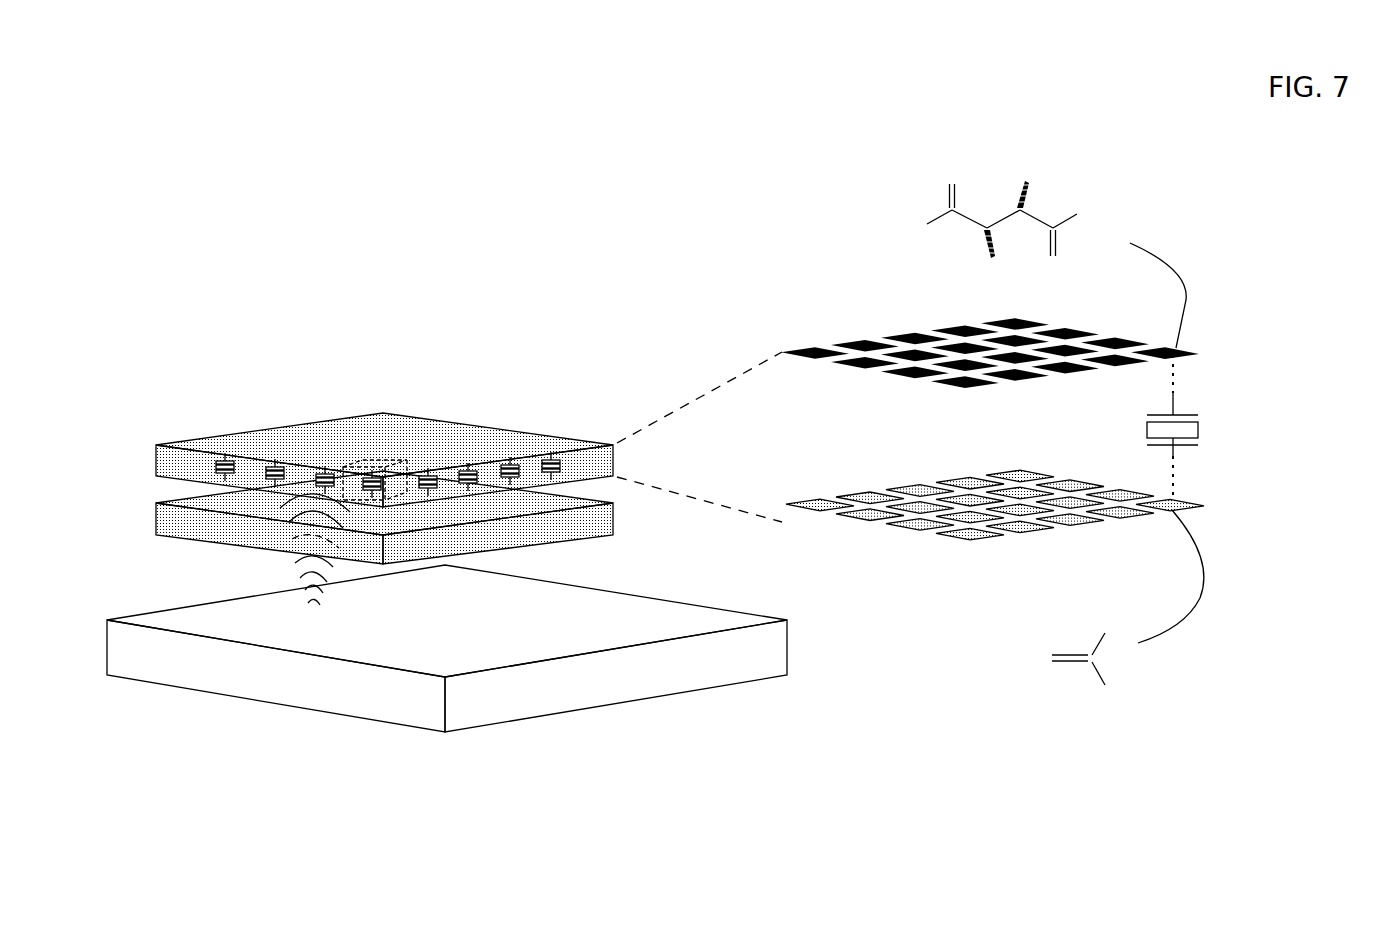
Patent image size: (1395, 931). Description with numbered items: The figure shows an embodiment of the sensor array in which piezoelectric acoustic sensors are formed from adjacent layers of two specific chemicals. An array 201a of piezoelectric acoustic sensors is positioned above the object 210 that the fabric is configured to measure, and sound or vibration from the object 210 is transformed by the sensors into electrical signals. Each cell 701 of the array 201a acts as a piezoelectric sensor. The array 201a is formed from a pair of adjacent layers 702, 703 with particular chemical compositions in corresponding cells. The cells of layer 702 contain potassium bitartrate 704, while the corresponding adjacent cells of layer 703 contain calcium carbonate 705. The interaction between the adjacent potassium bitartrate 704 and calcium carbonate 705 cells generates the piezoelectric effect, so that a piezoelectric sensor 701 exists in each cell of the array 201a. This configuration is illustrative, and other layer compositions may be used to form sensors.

The array of piezoelectric acoustic sensors 201a is at (178, 462).
The cell 701 is at (557, 460).
The layer 702 is at (803, 349).
The layer 703 is at (827, 514).
The potassium bitartrate 704 is at (907, 205).
The calcium carbonate 705 is at (1007, 688).
The object 210 is at (230, 682).